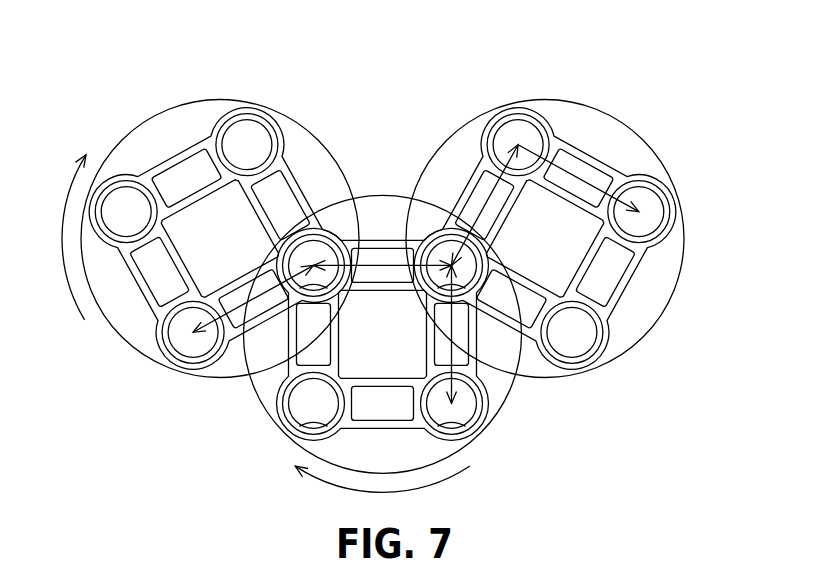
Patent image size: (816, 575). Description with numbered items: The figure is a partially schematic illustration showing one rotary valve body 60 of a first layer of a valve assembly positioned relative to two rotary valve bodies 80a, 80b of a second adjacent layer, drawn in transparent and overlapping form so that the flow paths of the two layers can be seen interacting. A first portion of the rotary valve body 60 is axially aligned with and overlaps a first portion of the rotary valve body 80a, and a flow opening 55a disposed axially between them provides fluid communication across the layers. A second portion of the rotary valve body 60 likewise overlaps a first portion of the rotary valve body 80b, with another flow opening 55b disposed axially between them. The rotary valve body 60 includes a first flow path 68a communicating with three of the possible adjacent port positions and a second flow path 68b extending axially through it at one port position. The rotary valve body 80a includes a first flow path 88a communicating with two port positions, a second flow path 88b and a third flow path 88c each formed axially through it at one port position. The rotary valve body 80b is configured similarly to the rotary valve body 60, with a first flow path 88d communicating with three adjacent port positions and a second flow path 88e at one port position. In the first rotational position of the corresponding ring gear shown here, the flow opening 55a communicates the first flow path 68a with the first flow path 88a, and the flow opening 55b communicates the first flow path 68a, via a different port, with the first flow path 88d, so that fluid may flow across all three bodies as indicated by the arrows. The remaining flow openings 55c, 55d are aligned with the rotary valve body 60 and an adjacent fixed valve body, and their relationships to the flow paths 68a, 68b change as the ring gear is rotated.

The rotary valve body 60 is at (382, 195).
The flow opening 55a is at (343, 293).
The flow opening 55b is at (432, 306).
The flow opening 55c is at (293, 438).
The flow opening 55d is at (467, 435).
The first flow path 68a is at (475, 400).
The second flow path 68b is at (294, 398).
The rotary valve body 80a is at (148, 360).
The rotary valve body 80b is at (617, 358).
The first flow path 88a is at (186, 355).
The second flow path 88b is at (123, 190).
The third flow path 88c is at (238, 125).
The first flow path 88d is at (533, 127).
The second flow path 88e is at (585, 351).